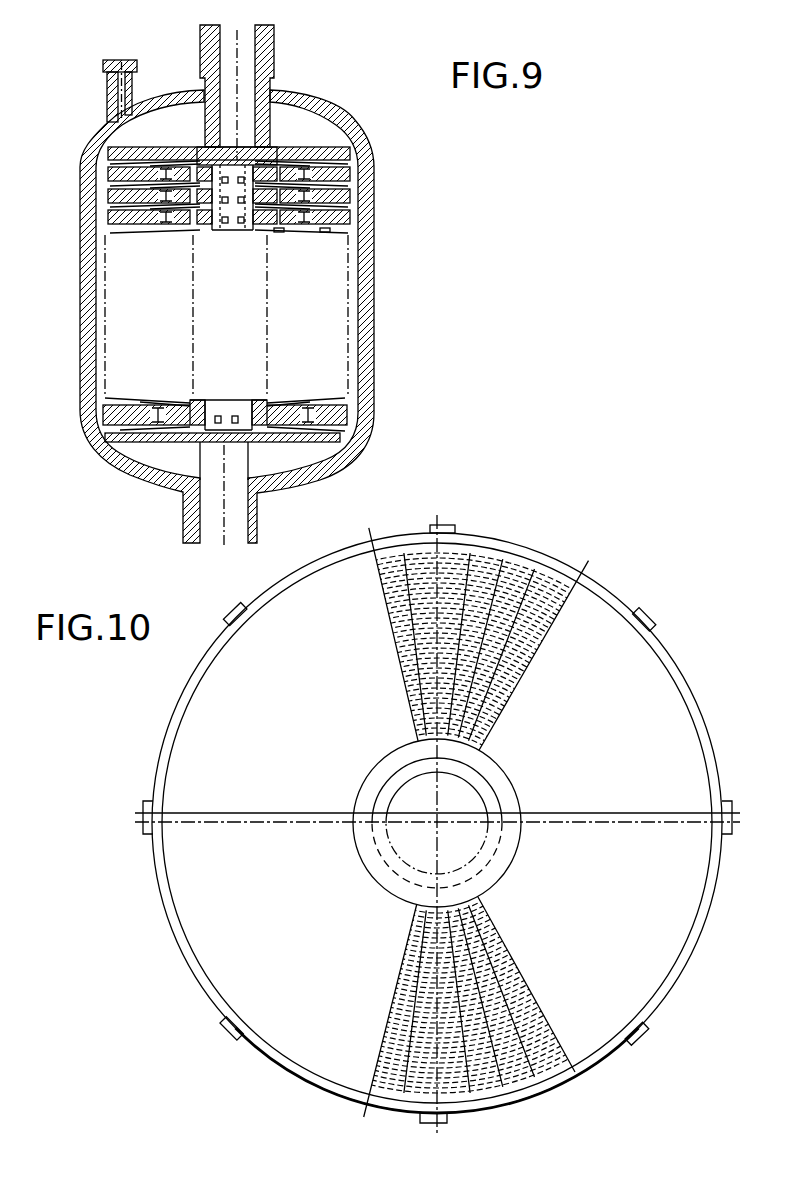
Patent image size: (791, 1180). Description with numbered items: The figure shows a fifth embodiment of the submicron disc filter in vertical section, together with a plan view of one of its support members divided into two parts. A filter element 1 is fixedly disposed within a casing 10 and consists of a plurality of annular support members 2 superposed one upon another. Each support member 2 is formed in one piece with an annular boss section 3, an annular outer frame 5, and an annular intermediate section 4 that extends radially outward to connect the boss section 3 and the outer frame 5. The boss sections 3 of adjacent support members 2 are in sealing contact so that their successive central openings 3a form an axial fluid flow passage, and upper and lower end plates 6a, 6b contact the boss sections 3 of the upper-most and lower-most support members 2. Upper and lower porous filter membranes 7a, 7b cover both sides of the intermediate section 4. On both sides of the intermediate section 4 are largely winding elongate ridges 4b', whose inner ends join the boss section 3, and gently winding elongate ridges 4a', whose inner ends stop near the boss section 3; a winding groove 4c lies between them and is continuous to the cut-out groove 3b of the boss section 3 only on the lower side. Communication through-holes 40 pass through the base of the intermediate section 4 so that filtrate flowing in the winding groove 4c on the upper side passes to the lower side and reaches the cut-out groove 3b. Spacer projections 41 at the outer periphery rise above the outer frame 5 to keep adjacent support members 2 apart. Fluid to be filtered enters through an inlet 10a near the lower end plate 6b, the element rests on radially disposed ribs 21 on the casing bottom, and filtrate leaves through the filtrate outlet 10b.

In FIG. 9, the filter element 1 is at (230, 293).
In FIG. 9, the support member 2 is at (113, 225).
In FIG. 10, the support member 2 is at (152, 772).
In FIG. 9, the boss section 3 is at (205, 233).
In FIG. 10, the boss section 3 is at (470, 788).
In FIG. 9, the central opening 3a is at (263, 238).
In FIG. 10, the central opening 3a is at (500, 800).
In FIG. 9, the cut-out groove 3b is at (235, 233).
In FIG. 10, the intermediate section 4 is at (562, 618).
In FIG. 10, the gently winding elongate ridge 4a' is at (575, 810).
In FIG. 9, the largely winding elongate ridge 4b' is at (233, 239).
In FIG. 10, the largely winding elongate ridge 4b' is at (552, 805).
In FIG. 9, the winding groove 4c is at (345, 230).
In FIG. 10, the winding groove 4c is at (558, 618).
In FIG. 9, the outer frame 5 is at (108, 215).
In FIG. 10, the outer frame 5 is at (490, 543).
In FIG. 9, the upper end plate 6a is at (312, 152).
In FIG. 9, the lower end plate 6b is at (322, 443).
In FIG. 9, the upper filter membrane 7a is at (195, 208).
In FIG. 9, the lower filter membrane 7b is at (313, 395).
In FIG. 9, the casing 10 is at (232, 293).
In FIG. 9, the inlet 10a is at (228, 532).
In FIG. 9, the filtrate outlet 10b is at (243, 32).
In FIG. 9, the ribs 21 is at (200, 480).
In FIG. 9, the communication through-hole 40 is at (333, 239).
In FIG. 10, the communication through-hole 40 is at (410, 733).
In FIG. 10, the spacer projection 41 is at (452, 525).